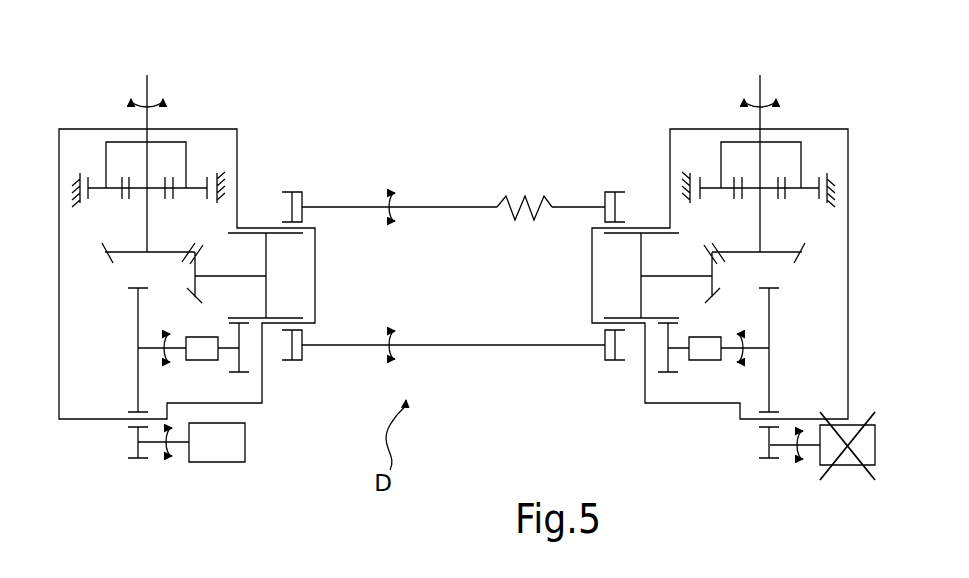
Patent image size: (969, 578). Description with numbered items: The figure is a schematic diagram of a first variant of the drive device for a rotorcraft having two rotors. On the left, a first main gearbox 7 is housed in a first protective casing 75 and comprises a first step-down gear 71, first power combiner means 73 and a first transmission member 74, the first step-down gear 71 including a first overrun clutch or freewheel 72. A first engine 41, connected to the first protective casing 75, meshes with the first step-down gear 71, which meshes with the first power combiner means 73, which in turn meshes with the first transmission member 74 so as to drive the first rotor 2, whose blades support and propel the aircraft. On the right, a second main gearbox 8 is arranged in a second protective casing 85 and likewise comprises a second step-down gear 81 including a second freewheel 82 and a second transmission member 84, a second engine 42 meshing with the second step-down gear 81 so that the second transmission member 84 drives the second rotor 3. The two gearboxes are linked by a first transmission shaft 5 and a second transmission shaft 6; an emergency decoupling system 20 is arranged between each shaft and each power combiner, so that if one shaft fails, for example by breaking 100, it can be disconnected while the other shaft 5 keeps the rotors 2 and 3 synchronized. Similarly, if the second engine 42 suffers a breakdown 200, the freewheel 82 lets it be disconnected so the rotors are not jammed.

The first rotor 2 is at (147, 83).
The second rotor 3 is at (760, 82).
The first transmission shaft 5 is at (517, 345).
The second transmission shaft 6 is at (445, 207).
The first main gearbox 7 is at (246, 145).
The second main gearbox 8 is at (657, 132).
The emergency decoupling system 20 is at (296, 188).
The first engine 41 is at (245, 452).
The second engine 42 is at (848, 465).
The first step-down gear 71 is at (138, 392).
The first freewheel 72 is at (185, 336).
The first power combiner means 73 is at (266, 252).
The first transmission member 74 is at (186, 148).
The first protective casing 75 is at (92, 128).
The second step-down gear 81 is at (770, 368).
The second freewheel 82 is at (703, 362).
The second transmission member 84 is at (718, 155).
The second protective casing 85 is at (803, 129).
The breaking 100 is at (498, 215).
The breakdown 200 is at (875, 413).